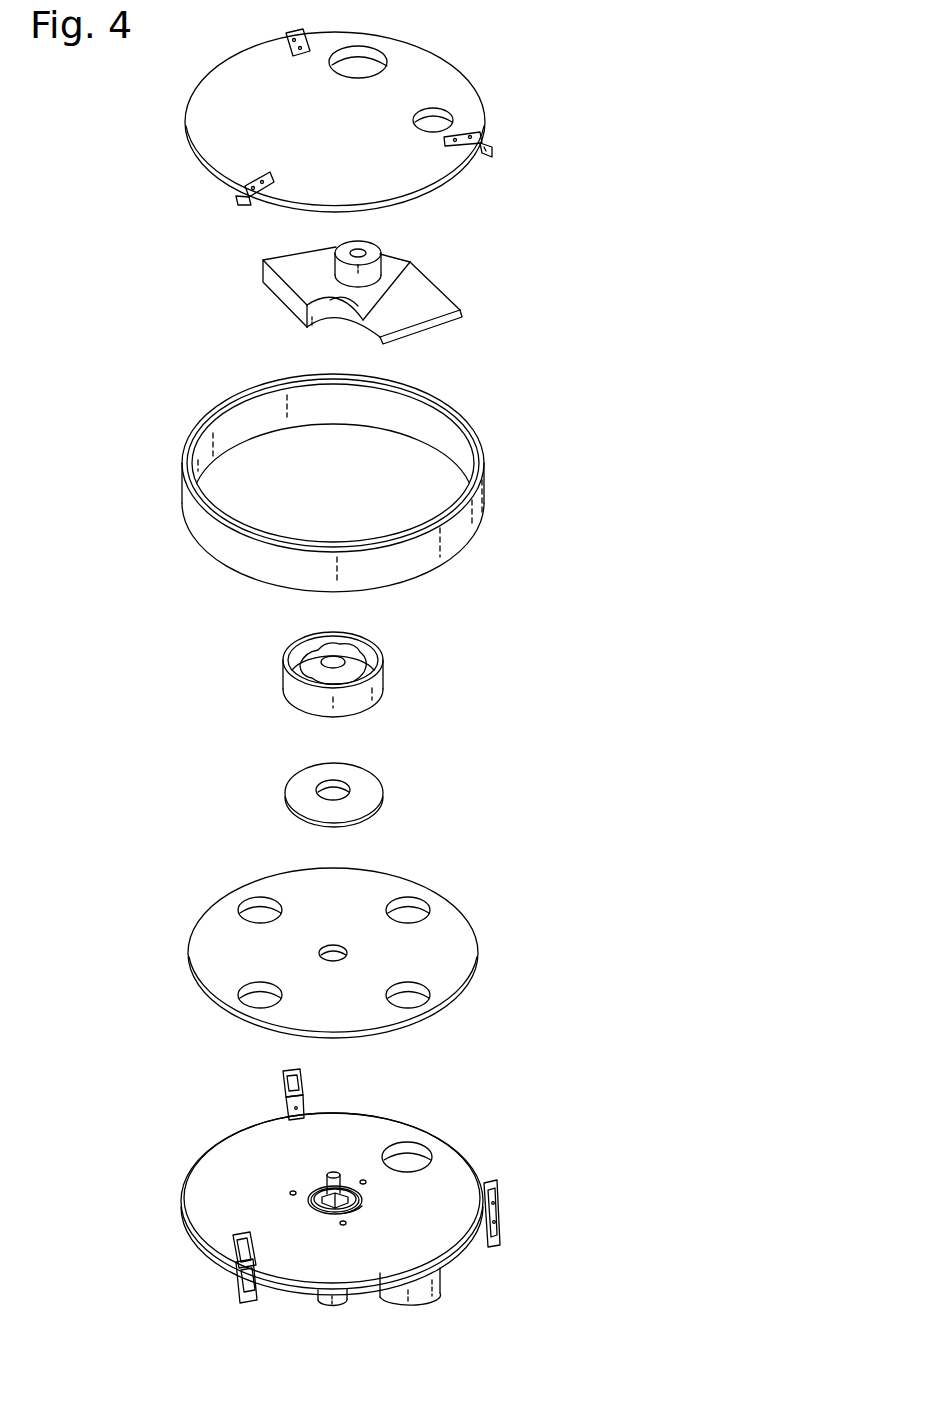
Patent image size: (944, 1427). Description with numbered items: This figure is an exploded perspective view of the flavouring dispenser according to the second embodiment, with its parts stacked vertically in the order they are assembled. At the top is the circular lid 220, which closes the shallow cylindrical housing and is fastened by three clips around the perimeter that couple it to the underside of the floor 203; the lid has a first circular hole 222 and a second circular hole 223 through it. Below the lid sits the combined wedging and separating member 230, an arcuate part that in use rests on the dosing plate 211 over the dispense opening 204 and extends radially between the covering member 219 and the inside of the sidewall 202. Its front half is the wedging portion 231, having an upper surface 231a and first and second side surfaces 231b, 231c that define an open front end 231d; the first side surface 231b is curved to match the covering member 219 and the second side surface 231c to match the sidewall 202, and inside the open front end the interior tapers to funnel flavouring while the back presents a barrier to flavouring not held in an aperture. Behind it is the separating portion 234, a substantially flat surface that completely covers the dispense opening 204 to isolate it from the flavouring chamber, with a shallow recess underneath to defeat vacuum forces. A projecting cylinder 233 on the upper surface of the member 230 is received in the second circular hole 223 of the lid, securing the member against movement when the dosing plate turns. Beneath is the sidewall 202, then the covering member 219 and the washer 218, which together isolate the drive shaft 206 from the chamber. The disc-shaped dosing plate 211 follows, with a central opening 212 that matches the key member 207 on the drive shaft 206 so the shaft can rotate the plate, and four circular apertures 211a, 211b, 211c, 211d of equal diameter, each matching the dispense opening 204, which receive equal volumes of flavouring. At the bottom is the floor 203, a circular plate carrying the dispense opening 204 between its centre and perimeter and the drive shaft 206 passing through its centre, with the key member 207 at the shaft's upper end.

The sidewall 202 is at (213, 536).
The floor 203 is at (205, 1190).
The dispense opening 204 is at (413, 1157).
The drive shaft 206 is at (322, 1188).
The key member 207 is at (360, 1205).
The dosing plate 211 is at (339, 939).
The circular aperture 211a is at (415, 910).
The circular aperture 211b is at (415, 997).
The circular aperture 211c is at (250, 996).
The circular aperture 211d is at (250, 910).
The opening 212 is at (335, 950).
The washer 218 is at (285, 785).
The covering member 219 is at (362, 690).
The circular lid 220 is at (215, 126).
The first circular hole 222 is at (445, 118).
The second circular hole 223 is at (368, 63).
The combined wedging and separating member 230 is at (341, 279).
The wedging portion 231 is at (272, 286).
The upper surface 231a is at (285, 276).
The first side surface 231b is at (328, 321).
The second side surface 231c is at (308, 247).
The open front end 231d is at (256, 313).
The projecting cylinder 233 is at (368, 246).
The separating portion 234 is at (428, 298).